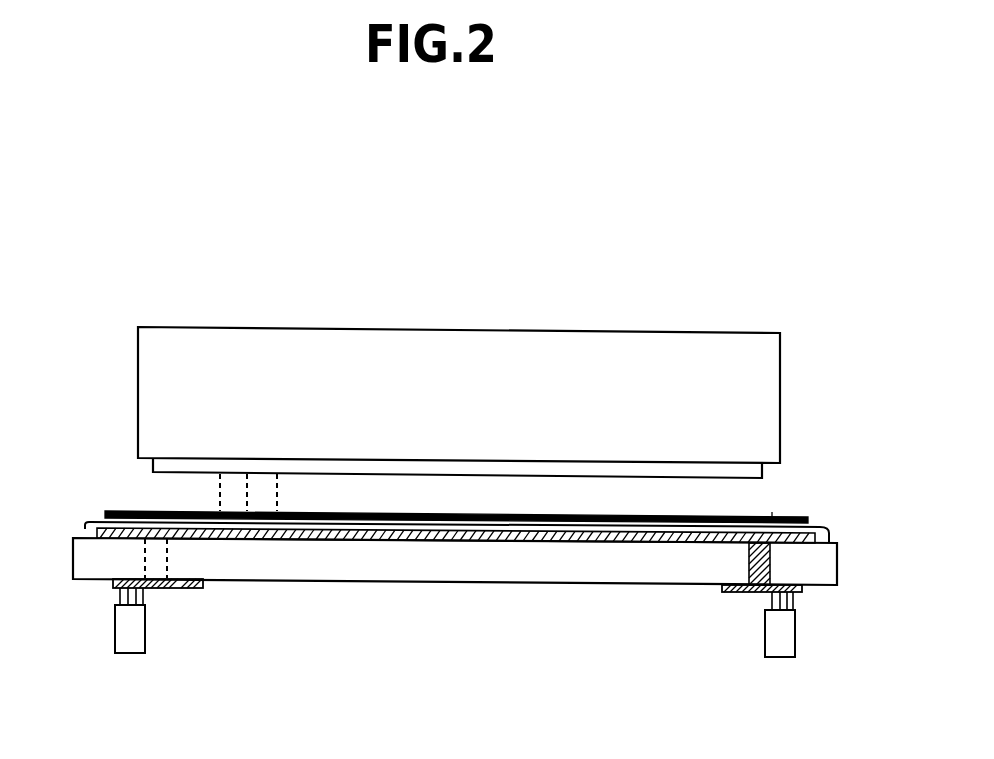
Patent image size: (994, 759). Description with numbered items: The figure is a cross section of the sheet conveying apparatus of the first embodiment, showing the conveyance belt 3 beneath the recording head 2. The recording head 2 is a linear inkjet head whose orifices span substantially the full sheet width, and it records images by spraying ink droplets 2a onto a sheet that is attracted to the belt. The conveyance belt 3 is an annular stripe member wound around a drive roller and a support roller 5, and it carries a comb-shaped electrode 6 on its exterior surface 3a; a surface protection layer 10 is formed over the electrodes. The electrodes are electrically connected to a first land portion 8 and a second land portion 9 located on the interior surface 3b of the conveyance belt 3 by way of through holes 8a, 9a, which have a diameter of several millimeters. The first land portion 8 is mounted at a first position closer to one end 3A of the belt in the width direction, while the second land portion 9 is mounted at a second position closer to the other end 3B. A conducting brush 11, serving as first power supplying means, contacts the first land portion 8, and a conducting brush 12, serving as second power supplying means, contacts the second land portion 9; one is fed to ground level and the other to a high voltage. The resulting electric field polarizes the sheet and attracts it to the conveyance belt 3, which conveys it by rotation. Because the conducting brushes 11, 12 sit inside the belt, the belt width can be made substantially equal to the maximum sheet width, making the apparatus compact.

The recording head 2 is at (292, 340).
The ink droplets 2a is at (277, 500).
The conveyance belt 3 is at (433, 568).
The exterior surface 3a is at (772, 512).
The interior surface 3b is at (543, 585).
The one end 3A is at (88, 592).
The other end 3B is at (815, 602).
The support roller 5 is at (450, 513).
The comb-shaped electrode 6 is at (565, 527).
The first land portion 8 is at (735, 592).
The through hole 8a is at (748, 562).
The second land portion 9 is at (182, 588).
The through hole 9a is at (168, 554).
The surface protection layer 10 is at (85, 523).
The conducting brush 11 is at (782, 657).
The conducting brush 12 is at (137, 653).